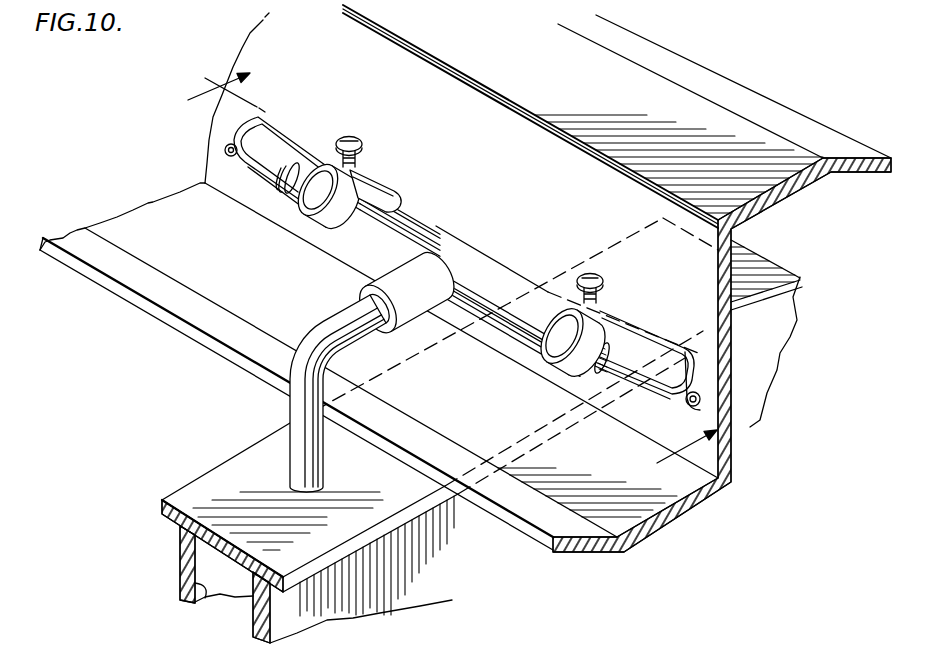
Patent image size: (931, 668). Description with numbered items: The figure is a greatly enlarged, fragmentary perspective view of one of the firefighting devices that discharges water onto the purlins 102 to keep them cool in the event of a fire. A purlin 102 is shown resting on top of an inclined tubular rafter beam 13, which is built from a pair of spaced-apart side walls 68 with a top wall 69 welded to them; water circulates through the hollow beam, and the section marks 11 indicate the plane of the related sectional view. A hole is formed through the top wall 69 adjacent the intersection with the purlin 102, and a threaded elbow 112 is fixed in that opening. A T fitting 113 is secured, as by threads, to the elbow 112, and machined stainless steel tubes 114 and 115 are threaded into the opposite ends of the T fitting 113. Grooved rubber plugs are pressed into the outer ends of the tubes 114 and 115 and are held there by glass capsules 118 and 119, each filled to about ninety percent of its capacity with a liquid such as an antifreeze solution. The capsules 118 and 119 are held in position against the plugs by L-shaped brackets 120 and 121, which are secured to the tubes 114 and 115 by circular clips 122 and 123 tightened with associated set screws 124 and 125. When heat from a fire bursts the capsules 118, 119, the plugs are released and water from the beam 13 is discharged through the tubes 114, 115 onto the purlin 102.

The concrete floor 11 is at (452, 257).
The rafter beam 13 is at (380, 580).
The side wall 68 is at (253, 608).
The top wall 69 is at (233, 487).
The purlin 102 is at (731, 365).
The threaded elbow 112 is at (297, 408).
The T fitting 113 is at (430, 240).
The machined tube 114 is at (360, 227).
The machined tube 115 is at (527, 335).
The capsule 118 is at (268, 165).
The capsule 119 is at (650, 400).
The L-shaped bracket 120 is at (285, 142).
The L-shaped bracket 121 is at (630, 337).
The circular clip 122 is at (363, 168).
The circular clip 123 is at (562, 377).
The set screw 124 is at (363, 143).
The set screw 125 is at (597, 280).